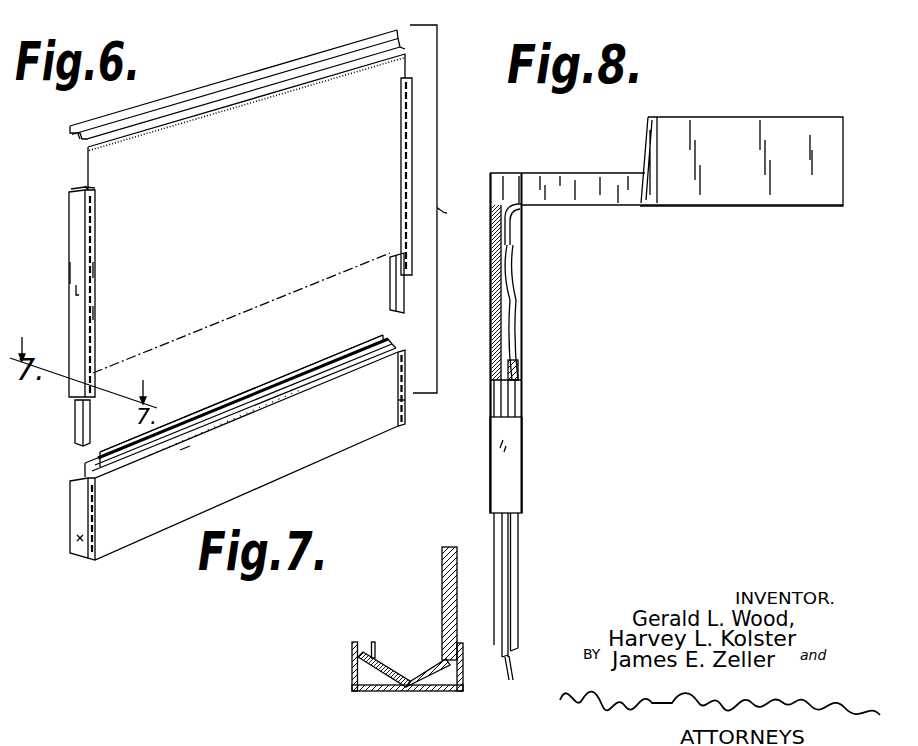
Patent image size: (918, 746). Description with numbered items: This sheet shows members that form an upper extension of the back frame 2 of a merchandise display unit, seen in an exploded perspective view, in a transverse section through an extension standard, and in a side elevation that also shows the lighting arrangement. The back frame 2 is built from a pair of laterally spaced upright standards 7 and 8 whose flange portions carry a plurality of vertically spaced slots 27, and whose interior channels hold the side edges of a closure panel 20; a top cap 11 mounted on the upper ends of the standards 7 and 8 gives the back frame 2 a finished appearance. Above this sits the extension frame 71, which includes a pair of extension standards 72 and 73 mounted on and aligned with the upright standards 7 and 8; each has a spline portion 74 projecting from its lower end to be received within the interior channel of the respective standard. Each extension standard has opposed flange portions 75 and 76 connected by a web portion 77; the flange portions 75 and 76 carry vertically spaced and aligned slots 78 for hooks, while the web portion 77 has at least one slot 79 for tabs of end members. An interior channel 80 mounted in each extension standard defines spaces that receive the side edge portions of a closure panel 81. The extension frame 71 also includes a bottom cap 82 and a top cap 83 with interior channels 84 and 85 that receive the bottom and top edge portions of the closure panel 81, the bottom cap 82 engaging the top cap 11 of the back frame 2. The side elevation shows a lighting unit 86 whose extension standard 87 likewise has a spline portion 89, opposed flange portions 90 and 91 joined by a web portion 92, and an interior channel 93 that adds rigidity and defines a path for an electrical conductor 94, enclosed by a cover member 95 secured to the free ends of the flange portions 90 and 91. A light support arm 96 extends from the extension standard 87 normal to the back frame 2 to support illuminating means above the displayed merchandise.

In FIG. 6, the back frame 2 is at (63, 503).
In FIG. 6, the upright standard 7 is at (78, 538).
In FIG. 6, the upright standard 8 is at (407, 402).
In FIG. 6, the top cap 11 is at (185, 450).
In FIG. 6, the closure panel 20 is at (412, 400).
In FIG. 6, the slots 27 is at (97, 533).
In FIG. 6, the extension frame 71 is at (63, 240).
In FIG. 6, the extension standard 72 is at (95, 270).
In FIG. 6, the extension standard 73 is at (403, 183).
In FIG. 6, the spline portion 74 is at (75, 433).
In FIG. 7, the spline portion 74 is at (388, 673).
In FIG. 6, the flange portion 75 is at (95, 313).
In FIG. 7, the flange portion 75 is at (463, 664).
In FIG. 6, the flange portion 76 is at (79, 190).
In FIG. 7, the flange portion 76 is at (353, 648).
In FIG. 6, the web portion 77 is at (72, 273).
In FIG. 7, the web portion 77 is at (382, 692).
In FIG. 6, the slots 78 is at (97, 232).
In FIG. 7, the slots 78 is at (353, 677).
In FIG. 6, the slot 79 is at (76, 292).
In FIG. 6, the interior channel 80 is at (85, 192).
In FIG. 7, the interior channel 80 is at (374, 652).
In FIG. 6, the closure panel 81 is at (300, 97).
In FIG. 7, the closure panel 81 is at (442, 580).
In FIG. 6, the bottom cap 82 is at (187, 415).
In FIG. 6, the top cap 83 is at (210, 85).
In FIG. 6, the interior channel 84 is at (272, 387).
In FIG. 6, the interior channel 85 is at (78, 131).
In FIG. 8, the lighting unit 86 is at (778, 115).
In FIG. 8, the extension standard 87 is at (521, 458).
In FIG. 8, the spline portion 89 is at (520, 568).
In FIG. 8, the flange portion 90 is at (522, 342).
In FIG. 8, the flange portion 91 is at (491, 305).
In FIG. 8, the web portion 92 is at (516, 300).
In FIG. 8, the interior channel 93 is at (523, 371).
In FIG. 8, the electrical conductor 94 is at (522, 241).
In FIG. 8, the cover member 95 is at (514, 480).
In FIG. 8, the light support arm 96 is at (607, 182).